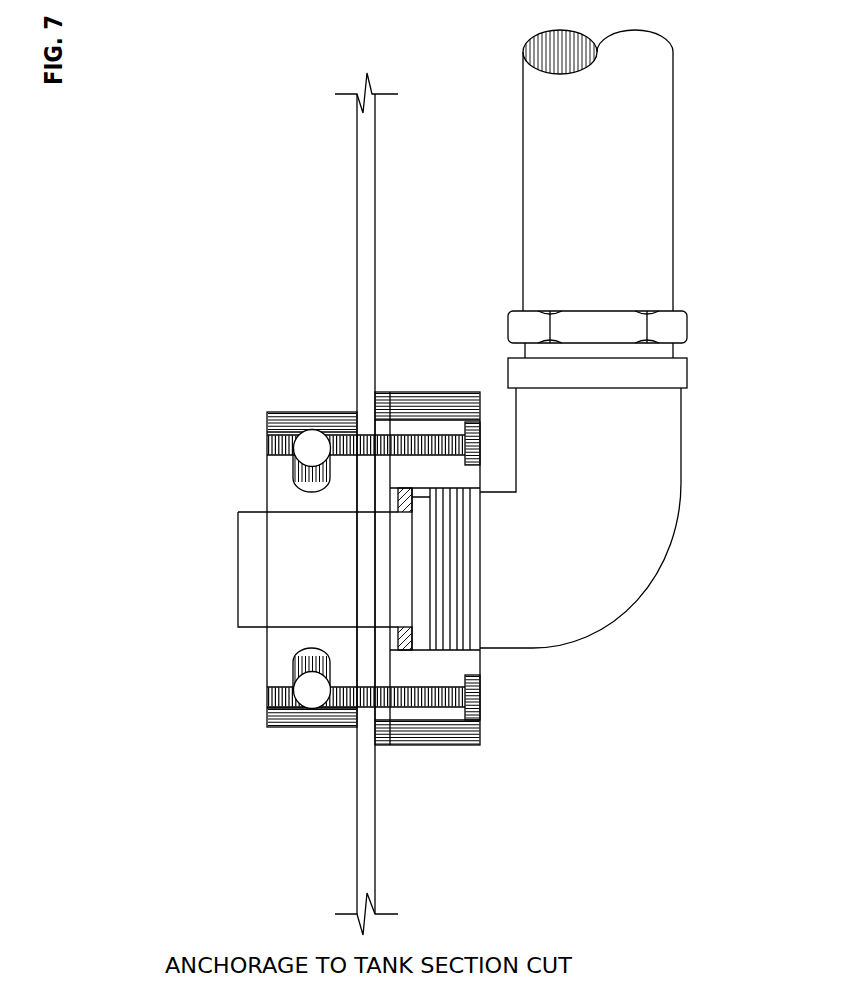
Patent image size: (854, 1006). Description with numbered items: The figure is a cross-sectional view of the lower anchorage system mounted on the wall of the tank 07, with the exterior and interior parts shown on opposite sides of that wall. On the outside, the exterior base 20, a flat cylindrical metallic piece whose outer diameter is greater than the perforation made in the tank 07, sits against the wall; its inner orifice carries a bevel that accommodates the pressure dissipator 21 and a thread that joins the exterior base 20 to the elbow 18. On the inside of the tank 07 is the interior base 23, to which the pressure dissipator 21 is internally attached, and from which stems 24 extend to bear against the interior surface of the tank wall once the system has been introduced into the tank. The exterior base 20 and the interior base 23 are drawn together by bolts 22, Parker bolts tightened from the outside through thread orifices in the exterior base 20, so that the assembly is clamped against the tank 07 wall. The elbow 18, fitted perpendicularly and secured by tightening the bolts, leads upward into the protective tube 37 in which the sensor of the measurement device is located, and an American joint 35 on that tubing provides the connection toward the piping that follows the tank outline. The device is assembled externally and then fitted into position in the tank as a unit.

The tank 07 is at (367, 837).
The elbow 18 is at (585, 515).
The exterior base 20 is at (480, 408).
The pressure dissipator 21 is at (295, 578).
The bolts 22 is at (480, 688).
The interior base 23 is at (295, 497).
The stems 24 is at (313, 688).
The American joint 35 is at (587, 326).
The protective tube 37 is at (587, 228).